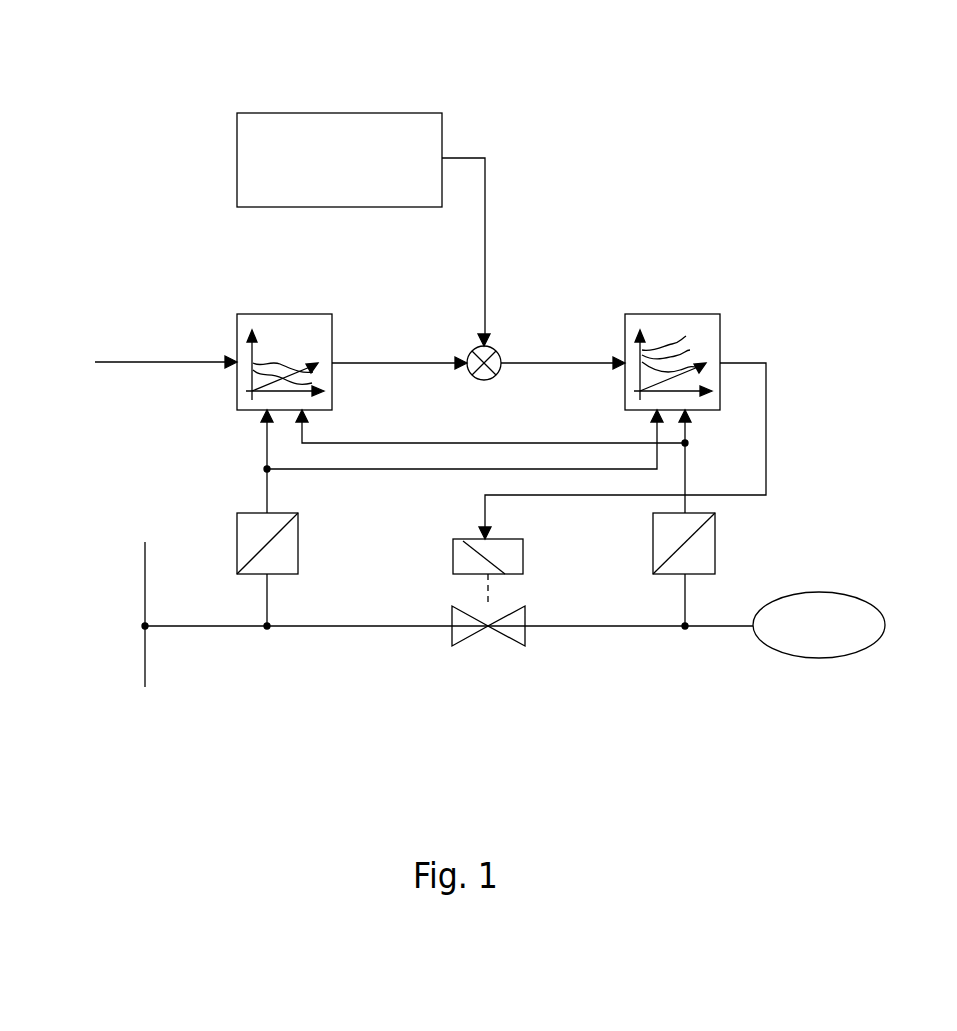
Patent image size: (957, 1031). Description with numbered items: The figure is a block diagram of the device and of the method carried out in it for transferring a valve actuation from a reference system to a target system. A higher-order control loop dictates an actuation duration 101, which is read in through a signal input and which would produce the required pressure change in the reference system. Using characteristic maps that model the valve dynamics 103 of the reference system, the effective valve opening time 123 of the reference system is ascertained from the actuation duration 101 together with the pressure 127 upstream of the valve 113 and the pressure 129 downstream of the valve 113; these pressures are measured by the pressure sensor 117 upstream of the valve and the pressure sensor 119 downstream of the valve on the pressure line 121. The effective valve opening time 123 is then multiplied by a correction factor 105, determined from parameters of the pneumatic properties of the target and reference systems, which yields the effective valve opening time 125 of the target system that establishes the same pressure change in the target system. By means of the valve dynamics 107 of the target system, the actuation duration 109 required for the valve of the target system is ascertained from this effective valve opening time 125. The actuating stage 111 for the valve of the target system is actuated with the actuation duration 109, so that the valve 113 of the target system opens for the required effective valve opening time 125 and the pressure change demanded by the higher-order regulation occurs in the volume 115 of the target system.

The actuation duration 101 is at (131, 362).
The valve dynamics of the reference system 103 is at (257, 314).
The correction factor 105 is at (378, 113).
The valve dynamics of the target system 107 is at (682, 314).
The actuation duration for the valve of the target system 109 is at (766, 406).
The actuating stage for the valve of the target system 111 is at (453, 552).
The valve of the target system 113 is at (468, 640).
The volume of the target system 115 is at (827, 660).
The pressure sensor upstream of valve 117 is at (237, 535).
The pressure sensor downstream of valve 119 is at (715, 545).
The pressure line 121 is at (146, 578).
The effective valve opening time of the reference system 123 is at (398, 362).
The effective valve opening time of the target system 125 is at (575, 362).
The pressure upstream of valve 127 is at (268, 630).
The pressure downstream of valve 129 is at (685, 630).